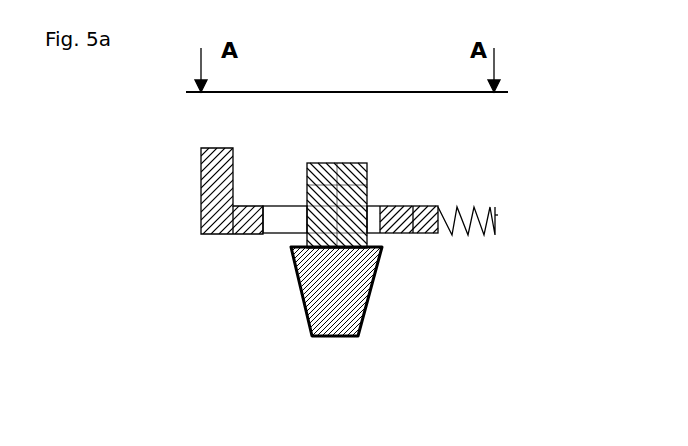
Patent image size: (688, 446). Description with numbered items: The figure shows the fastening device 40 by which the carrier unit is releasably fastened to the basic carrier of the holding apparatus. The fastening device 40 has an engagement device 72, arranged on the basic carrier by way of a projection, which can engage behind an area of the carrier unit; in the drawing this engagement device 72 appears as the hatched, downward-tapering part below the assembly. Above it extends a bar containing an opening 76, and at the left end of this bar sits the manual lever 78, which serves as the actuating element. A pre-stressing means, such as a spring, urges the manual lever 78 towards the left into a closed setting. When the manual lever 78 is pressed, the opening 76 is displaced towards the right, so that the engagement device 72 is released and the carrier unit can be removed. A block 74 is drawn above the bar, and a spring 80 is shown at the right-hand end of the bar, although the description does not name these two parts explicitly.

The fastening device 40 is at (433, 272).
The engagement device 72 is at (347, 292).
The valve body block 74 is at (347, 203).
The opening 76 is at (292, 225).
The manual lever 78 is at (203, 178).
The spring 80 is at (498, 215).